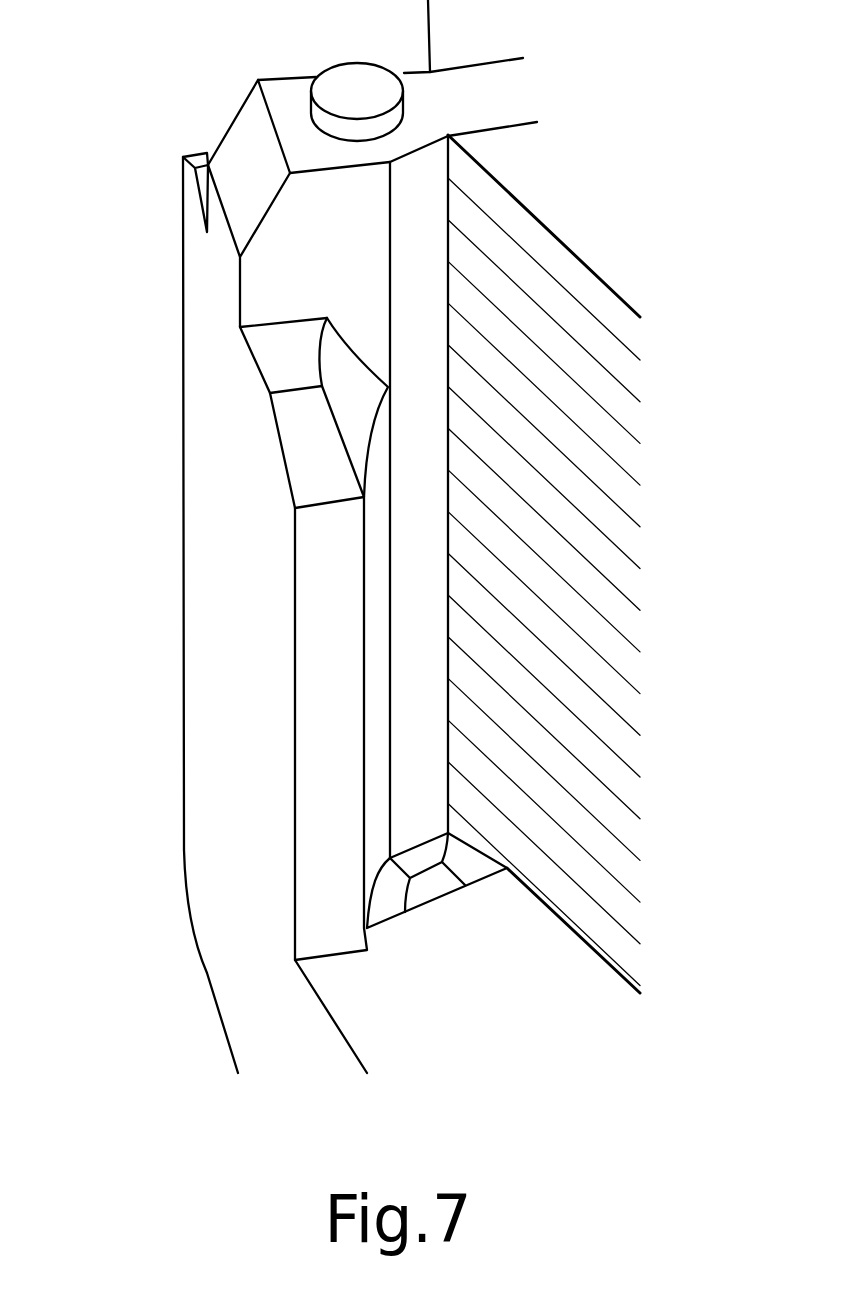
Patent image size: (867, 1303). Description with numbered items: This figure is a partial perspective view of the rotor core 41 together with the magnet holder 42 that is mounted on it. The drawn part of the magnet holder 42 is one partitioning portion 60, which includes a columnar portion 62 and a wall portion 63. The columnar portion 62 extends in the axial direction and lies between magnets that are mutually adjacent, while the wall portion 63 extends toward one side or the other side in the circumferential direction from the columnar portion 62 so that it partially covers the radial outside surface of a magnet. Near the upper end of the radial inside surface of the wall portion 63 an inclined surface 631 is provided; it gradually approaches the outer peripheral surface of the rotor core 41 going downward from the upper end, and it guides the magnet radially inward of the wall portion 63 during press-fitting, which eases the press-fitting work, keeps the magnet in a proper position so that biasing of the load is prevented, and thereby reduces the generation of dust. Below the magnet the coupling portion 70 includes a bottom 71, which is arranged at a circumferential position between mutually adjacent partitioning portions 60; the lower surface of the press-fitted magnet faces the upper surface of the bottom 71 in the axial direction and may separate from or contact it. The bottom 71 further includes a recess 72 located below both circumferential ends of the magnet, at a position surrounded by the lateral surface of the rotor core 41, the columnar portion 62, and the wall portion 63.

The rotor core 41 is at (533, 165).
The magnet holder 42 is at (137, 768).
The partitioning portion 60 is at (177, 110).
The columnar portion 62 is at (413, 240).
The wall portion 63 is at (192, 372).
The inclined surface 631 is at (348, 375).
The coupling portion 70 is at (258, 1000).
The bottom 71 is at (460, 1023).
The recess 72 is at (439, 874).